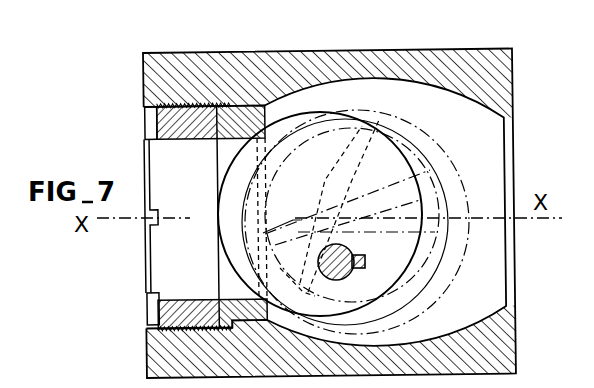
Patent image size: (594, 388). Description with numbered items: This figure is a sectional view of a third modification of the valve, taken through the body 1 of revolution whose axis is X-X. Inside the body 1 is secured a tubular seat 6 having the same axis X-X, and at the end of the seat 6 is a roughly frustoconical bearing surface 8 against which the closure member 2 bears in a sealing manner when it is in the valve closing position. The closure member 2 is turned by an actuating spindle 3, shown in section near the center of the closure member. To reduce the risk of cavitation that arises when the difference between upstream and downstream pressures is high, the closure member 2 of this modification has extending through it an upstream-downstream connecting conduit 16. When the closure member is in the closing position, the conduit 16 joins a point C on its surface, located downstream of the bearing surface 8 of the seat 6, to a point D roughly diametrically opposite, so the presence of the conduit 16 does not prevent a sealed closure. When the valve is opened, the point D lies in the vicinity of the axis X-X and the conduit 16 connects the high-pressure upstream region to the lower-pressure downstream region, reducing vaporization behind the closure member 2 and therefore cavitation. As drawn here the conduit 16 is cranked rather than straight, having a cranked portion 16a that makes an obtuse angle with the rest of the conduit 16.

The body 1 is at (437, 48).
The closure member 2 is at (383, 160).
The actuating spindle 3 is at (350, 256).
The tubular seat 6 is at (217, 152).
The bearing surface 8 is at (320, 214).
The upstream-downstream connecting conduit 16 is at (330, 190).
The cranked portion 16a is at (300, 285).
The point C is at (288, 314).
The point D is at (372, 125).